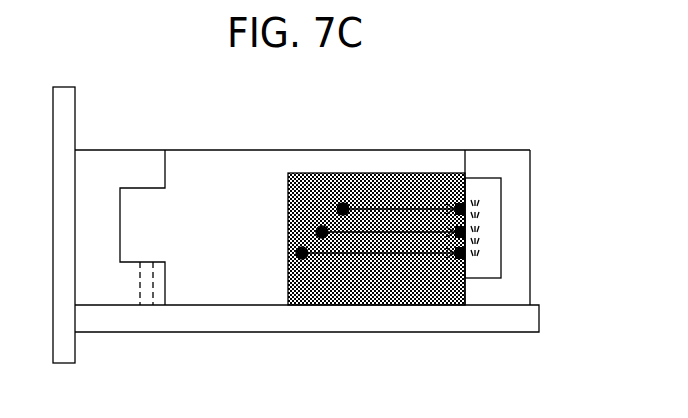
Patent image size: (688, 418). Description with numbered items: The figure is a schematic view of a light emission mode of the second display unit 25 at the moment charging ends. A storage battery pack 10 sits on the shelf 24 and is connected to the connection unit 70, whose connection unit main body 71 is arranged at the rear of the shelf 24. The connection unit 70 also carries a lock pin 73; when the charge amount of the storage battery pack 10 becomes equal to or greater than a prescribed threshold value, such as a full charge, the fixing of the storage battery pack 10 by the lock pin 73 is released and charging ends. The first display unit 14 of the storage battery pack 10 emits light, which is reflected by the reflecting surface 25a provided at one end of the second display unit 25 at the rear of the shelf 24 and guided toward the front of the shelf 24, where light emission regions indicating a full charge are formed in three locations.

The connection unit 70 is at (178, 127).
The connection unit main body 71 is at (145, 167).
The lock pin 73 is at (147, 272).
The storage battery pack 10 is at (248, 165).
The first display unit 14 is at (315, 260).
The shelf 24 is at (508, 323).
The second display unit 25 is at (440, 193).
The reflecting surface 25a is at (467, 270).